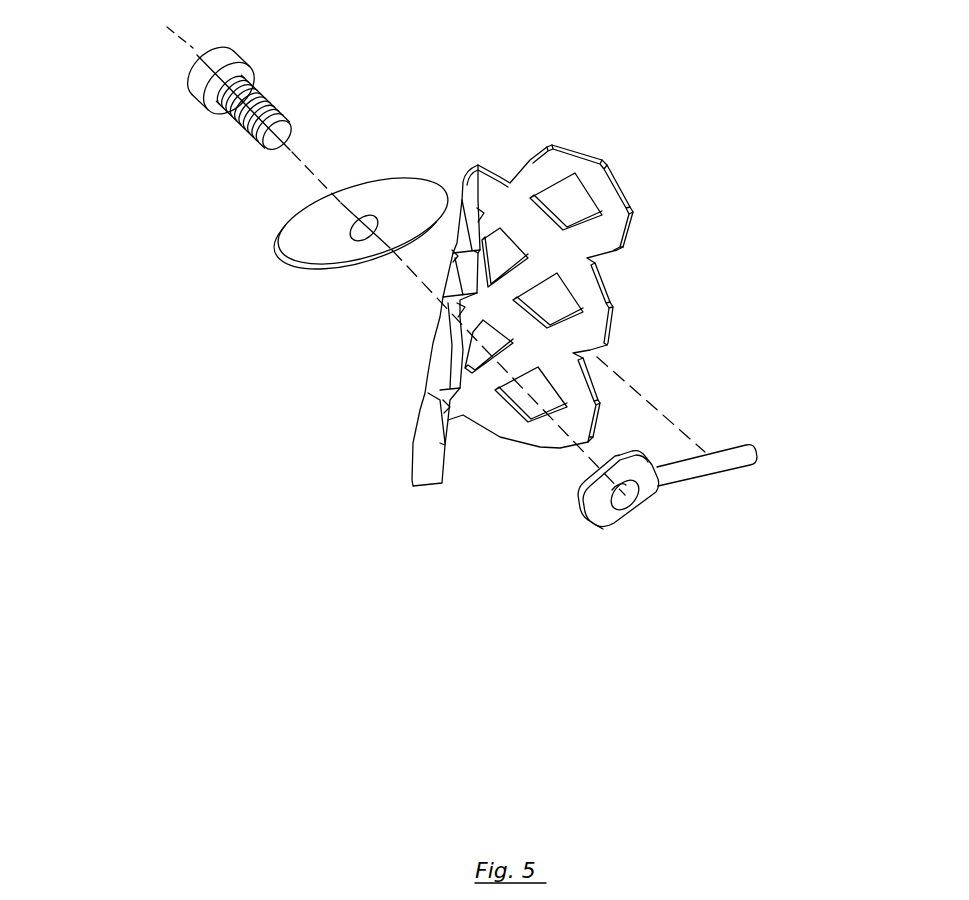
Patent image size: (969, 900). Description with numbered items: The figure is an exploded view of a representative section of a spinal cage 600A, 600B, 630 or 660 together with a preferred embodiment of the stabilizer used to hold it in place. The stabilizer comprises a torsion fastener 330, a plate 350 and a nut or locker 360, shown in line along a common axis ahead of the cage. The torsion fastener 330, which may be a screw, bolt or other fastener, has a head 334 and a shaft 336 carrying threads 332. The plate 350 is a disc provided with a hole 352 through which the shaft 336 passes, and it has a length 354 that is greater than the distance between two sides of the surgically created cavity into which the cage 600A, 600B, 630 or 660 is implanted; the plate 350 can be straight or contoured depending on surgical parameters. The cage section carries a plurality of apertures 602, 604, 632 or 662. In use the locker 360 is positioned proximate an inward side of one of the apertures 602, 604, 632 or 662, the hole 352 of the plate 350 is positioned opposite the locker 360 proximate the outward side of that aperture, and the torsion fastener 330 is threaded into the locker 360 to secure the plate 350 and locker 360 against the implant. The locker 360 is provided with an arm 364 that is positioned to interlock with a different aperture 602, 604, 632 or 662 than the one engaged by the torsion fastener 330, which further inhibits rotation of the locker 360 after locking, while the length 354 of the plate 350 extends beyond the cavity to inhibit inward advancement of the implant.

The torsion fastener 330 is at (231, 121).
The head 334 is at (187, 67).
The shaft 336 is at (267, 140).
The threads 332 is at (262, 91).
The plate 350 is at (320, 252).
The hole 352 is at (360, 245).
The length 354 is at (437, 197).
The cage 600A is at (472, 315).
The cage 600B is at (472, 315).
The cage 630 is at (472, 315).
The cage 660 is at (472, 315).
The aperture 602 is at (674, 297).
The aperture 604 is at (674, 297).
The aperture 632 is at (674, 297).
The aperture 662 is at (493, 337).
The nut or locker 360 is at (581, 527).
The arm 364 is at (731, 478).